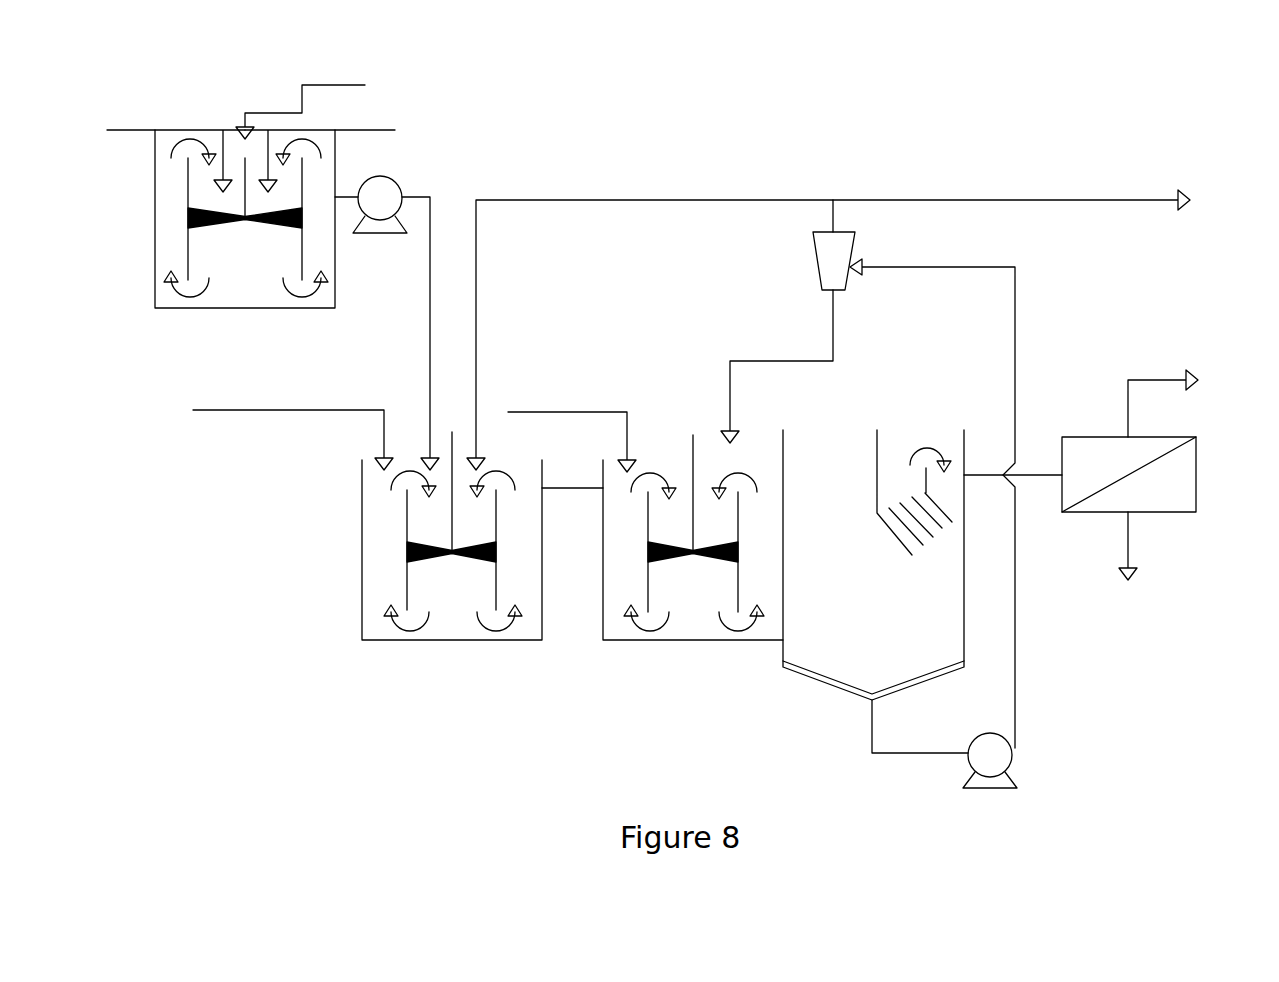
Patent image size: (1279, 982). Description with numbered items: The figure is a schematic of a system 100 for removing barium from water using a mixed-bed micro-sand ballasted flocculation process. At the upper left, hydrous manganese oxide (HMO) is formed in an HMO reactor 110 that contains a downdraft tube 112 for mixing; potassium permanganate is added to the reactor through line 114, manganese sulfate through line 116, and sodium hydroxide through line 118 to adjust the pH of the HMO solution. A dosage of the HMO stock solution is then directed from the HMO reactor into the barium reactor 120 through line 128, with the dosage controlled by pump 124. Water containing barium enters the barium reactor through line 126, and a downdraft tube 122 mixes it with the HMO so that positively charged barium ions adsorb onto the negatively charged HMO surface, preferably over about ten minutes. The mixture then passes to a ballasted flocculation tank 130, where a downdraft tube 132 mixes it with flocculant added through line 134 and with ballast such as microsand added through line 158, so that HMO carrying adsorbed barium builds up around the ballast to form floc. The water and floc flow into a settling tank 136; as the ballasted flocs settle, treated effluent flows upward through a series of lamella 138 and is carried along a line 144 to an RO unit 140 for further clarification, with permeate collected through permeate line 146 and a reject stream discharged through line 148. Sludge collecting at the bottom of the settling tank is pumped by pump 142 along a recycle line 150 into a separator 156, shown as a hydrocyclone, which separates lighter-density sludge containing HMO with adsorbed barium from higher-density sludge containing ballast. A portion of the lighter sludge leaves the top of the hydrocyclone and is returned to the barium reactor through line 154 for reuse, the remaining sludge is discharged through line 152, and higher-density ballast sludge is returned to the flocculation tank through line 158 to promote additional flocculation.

The system 100 is at (983, 108).
The HMO reactor 110 is at (157, 262).
The downdraft tube 112 is at (205, 199).
The line 114 is at (107, 130).
The line 116 is at (367, 130).
The line 118 is at (332, 85).
The barium reactor 120 is at (362, 602).
The downdraft tube 122 is at (427, 530).
The pump 124 is at (405, 187).
The line 126 is at (243, 410).
The line 128 is at (430, 368).
The ballasted flocculation tank 130 is at (603, 558).
The downdraft tube 132 is at (673, 528).
The line 134 is at (573, 412).
The settling tank 136 is at (966, 588).
The lamella 138 is at (897, 540).
The RO unit 140 is at (1196, 470).
The pump 142 is at (985, 736).
The settling tank effluent line 144 is at (990, 475).
The permeate line 146 is at (1152, 380).
The line 148 is at (1128, 551).
The sludge recycle line 150 is at (1017, 282).
The line 152 is at (1063, 199).
The line 154 is at (786, 200).
The separator 156 is at (818, 283).
The line 158 is at (730, 401).